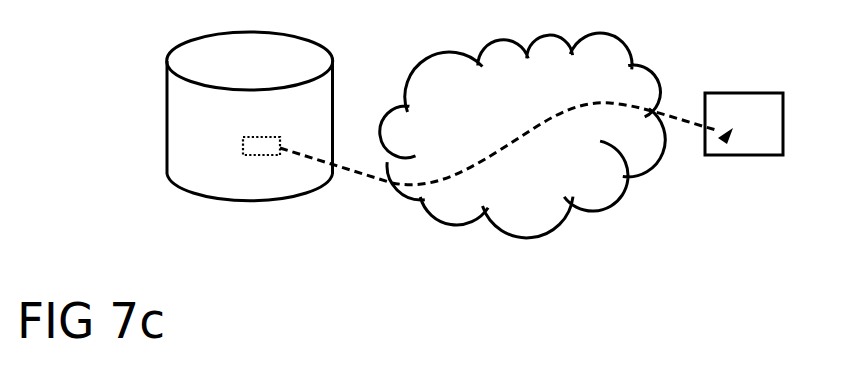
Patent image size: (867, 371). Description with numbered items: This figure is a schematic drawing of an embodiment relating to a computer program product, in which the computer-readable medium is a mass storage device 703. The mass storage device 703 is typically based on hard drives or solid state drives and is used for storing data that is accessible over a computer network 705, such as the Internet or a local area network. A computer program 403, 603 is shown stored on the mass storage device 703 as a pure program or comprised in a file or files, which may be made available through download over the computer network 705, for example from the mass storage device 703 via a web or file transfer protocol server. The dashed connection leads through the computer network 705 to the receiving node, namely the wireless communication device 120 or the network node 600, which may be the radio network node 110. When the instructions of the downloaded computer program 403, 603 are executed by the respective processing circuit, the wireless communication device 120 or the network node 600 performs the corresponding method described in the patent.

The mass storage device 703 is at (167, 117).
The computer program 403 is at (249, 194).
The computer program 603 is at (253, 157).
The computer network 705 is at (447, 223).
The wireless communication device 120 is at (739, 169).
The network node 600 is at (739, 169).
The radio network node 110 is at (722, 155).